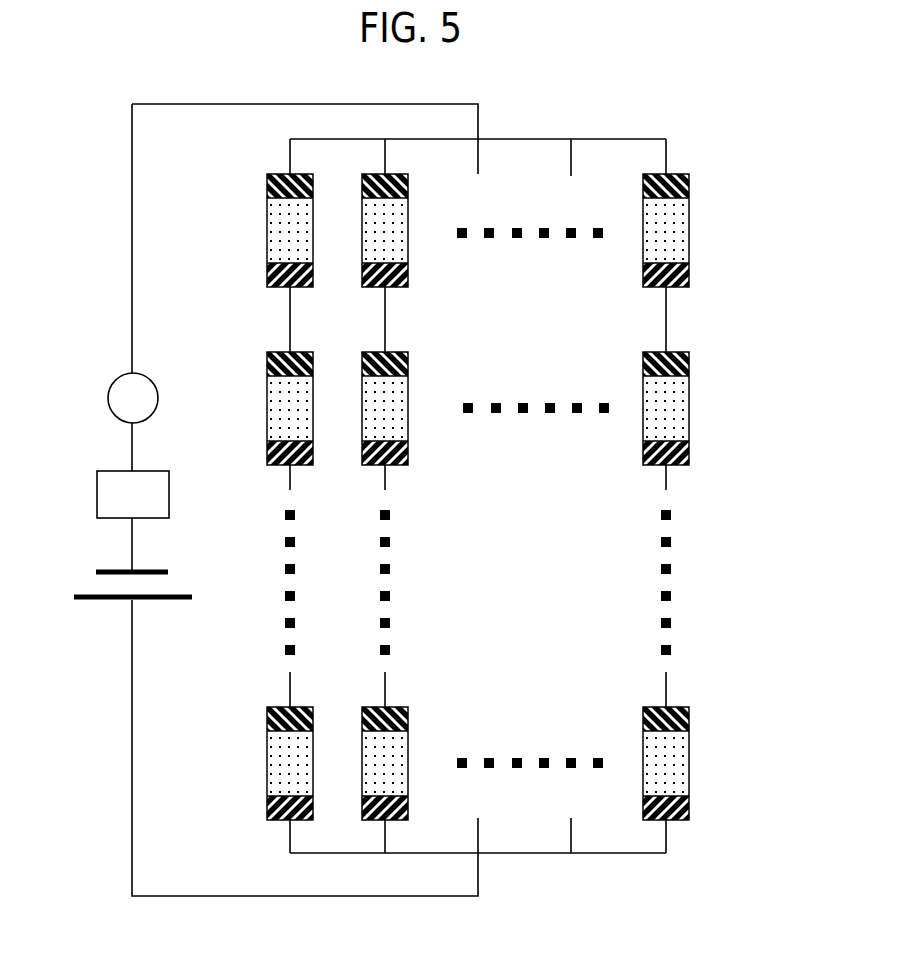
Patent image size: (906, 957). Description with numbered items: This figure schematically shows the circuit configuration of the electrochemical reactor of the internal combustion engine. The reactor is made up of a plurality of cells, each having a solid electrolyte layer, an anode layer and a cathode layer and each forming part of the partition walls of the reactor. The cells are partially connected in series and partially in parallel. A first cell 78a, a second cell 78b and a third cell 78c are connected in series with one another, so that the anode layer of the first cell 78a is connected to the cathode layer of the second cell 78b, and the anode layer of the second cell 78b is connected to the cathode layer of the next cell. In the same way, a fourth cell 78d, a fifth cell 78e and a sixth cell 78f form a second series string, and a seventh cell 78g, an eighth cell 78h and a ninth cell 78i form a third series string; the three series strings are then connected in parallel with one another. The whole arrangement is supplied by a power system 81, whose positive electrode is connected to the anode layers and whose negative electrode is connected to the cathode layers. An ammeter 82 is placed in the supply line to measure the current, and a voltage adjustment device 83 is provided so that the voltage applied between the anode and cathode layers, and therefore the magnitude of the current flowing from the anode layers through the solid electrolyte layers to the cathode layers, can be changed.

The first cell 78a is at (276, 234).
The second cell 78b is at (278, 412).
The third cell 78c is at (278, 765).
The fourth cell 78d is at (398, 215).
The fifth cell 78e is at (398, 393).
The sixth cell 78f is at (400, 745).
The seventh cell 78g is at (678, 233).
The eighth cell 78h is at (678, 407).
The ninth cell 78i is at (680, 760).
The power system 81 is at (114, 600).
The ammeter 82 is at (115, 372).
The voltage adjustment device 83 is at (120, 471).